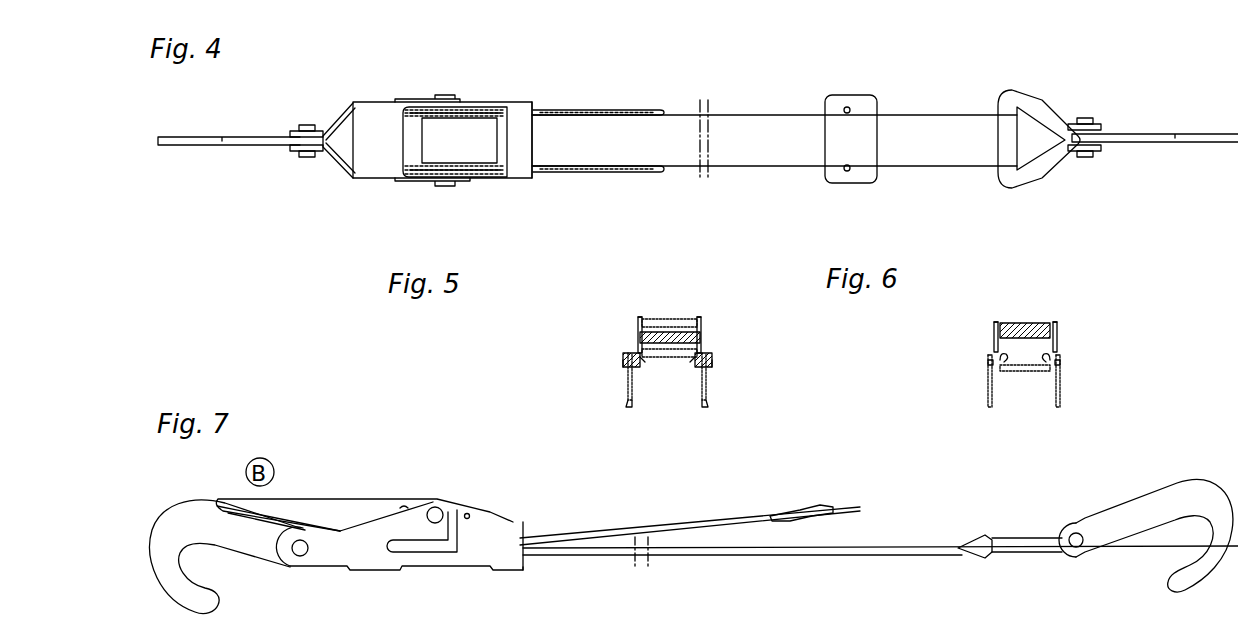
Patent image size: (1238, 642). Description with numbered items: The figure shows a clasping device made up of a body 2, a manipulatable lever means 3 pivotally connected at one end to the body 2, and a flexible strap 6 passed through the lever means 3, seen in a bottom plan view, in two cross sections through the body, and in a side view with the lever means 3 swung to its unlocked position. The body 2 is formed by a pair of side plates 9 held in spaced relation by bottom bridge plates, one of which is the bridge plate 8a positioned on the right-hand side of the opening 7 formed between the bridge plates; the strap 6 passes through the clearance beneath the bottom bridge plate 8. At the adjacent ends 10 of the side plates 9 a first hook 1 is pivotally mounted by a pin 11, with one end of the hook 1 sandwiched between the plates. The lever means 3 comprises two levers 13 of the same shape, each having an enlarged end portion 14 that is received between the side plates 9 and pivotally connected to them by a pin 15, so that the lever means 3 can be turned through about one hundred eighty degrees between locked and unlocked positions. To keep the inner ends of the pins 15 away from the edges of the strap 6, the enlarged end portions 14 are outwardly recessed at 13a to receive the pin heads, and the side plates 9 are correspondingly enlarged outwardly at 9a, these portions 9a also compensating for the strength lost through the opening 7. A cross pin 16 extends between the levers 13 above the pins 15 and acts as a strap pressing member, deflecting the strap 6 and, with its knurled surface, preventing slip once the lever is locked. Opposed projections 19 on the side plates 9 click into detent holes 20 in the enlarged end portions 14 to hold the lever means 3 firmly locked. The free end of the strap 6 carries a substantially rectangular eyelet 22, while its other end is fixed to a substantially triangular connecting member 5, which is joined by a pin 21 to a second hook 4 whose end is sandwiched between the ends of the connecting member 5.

In FIG. 4, the first hook 1 is at (204, 146).
In FIG. 7, the first hook 1 is at (155, 545).
In FIG. 4, the body 2 is at (526, 180).
In FIG. 5, the body 2 is at (626, 401).
In FIG. 6, the body 2 is at (1062, 399).
In FIG. 7, the body 2 is at (519, 573).
In FIG. 4, the manipulatable lever means 3 is at (556, 110).
In FIG. 5, the manipulatable lever means 3 is at (703, 330).
In FIG. 6, the manipulatable lever means 3 is at (1059, 332).
In FIG. 7, the manipulatable lever means 3 is at (349, 500).
In FIG. 4, the second hook 4 is at (1205, 133).
In FIG. 7, the second hook 4 is at (1195, 490).
In FIG. 4, the connecting member 5 is at (1040, 100).
In FIG. 7, the connecting member 5 is at (1030, 553).
In FIG. 4, the flexible strap 6 is at (780, 150).
In FIG. 5, the flexible strap 6 is at (667, 322).
In FIG. 6, the flexible strap 6 is at (1025, 323).
In FIG. 7, the flexible strap 6 is at (750, 556).
In FIG. 4, the opening 7 is at (415, 146).
In FIG. 4, the bottom bridge plate 8 is at (380, 160).
In FIG. 7, the bottom bridge plate 8 is at (400, 571).
In FIG. 4, the bottom bridge plate 8a is at (540, 145).
In FIG. 5, the side plate members 9 is at (628, 380).
In FIG. 6, the side plate members 9 is at (1060, 378).
In FIG. 7, the side plate members 9 is at (500, 512).
In FIG. 5, the outwardly enlarged portions 9a is at (628, 395).
In FIG. 4, the adjacent ends 10 is at (336, 107).
In FIG. 7, the adjacent ends 10 is at (335, 556).
In FIG. 4, the pin 11 is at (301, 155).
In FIG. 7, the pin 11 is at (300, 557).
In FIG. 4, the levers 13 is at (656, 108).
In FIG. 7, the levers 13 is at (300, 507).
In FIG. 5, the recessed portions 13a is at (644, 363).
In FIG. 4, the enlarged end portions 14 is at (467, 108).
In FIG. 5, the enlarged end portions 14 is at (638, 320).
In FIG. 6, the enlarged end portions 14 is at (996, 321).
In FIG. 4, the pins 15 is at (443, 182).
In FIG. 5, the pins 15 is at (623, 358).
In FIG. 7, the pins 15 is at (435, 506).
In FIG. 5, the cross pin 16 is at (640, 336).
In FIG. 6, the projections 19 is at (1000, 357).
In FIG. 6, the detent holes 20 is at (1015, 371).
In FIG. 7, the detent holes 20 is at (469, 513).
In FIG. 4, the pin 21 is at (1092, 120).
In FIG. 7, the pin 21 is at (1078, 548).
In FIG. 4, the eyelet 22 is at (866, 102).
In FIG. 7, the eyelet 22 is at (860, 508).